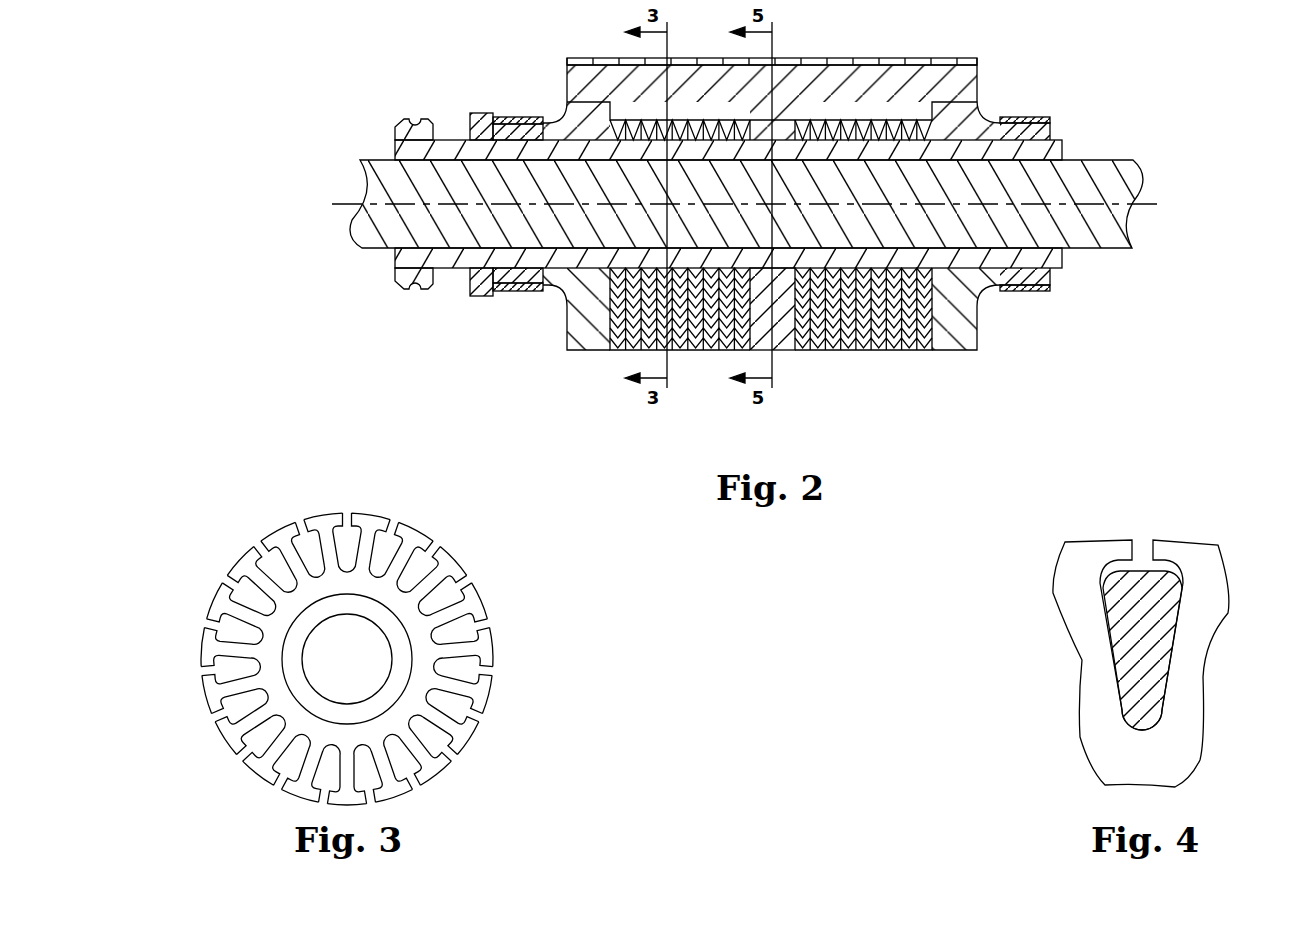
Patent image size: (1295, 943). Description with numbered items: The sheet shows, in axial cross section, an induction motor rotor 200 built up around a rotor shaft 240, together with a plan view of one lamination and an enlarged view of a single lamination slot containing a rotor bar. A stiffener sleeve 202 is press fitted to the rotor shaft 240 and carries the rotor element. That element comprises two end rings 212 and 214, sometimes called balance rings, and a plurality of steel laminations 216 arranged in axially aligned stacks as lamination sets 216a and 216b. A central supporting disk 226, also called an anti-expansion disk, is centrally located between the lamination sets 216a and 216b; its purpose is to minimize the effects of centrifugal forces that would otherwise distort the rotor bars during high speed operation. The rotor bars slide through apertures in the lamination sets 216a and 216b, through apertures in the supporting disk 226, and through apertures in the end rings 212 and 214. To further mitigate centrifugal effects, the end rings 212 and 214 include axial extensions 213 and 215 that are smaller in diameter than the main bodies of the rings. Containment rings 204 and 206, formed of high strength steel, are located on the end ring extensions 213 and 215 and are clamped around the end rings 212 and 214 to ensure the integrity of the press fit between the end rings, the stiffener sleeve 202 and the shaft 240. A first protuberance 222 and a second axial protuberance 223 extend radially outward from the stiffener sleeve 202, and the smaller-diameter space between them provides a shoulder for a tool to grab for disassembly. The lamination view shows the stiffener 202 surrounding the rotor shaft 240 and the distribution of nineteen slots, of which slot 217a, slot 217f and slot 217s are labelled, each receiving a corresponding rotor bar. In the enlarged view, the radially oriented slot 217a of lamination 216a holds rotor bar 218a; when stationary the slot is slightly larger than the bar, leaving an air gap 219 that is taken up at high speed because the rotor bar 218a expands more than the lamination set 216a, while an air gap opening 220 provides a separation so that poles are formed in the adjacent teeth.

In FIG. 2, the rotor 200 is at (747, 212).
In FIG. 2, the stiffener sleeve 202 is at (410, 155).
In FIG. 3, the stiffener sleeve 202 is at (368, 722).
In FIG. 2, the containment ring 204 is at (1010, 118).
In FIG. 2, the containment ring 206 is at (517, 115).
In FIG. 2, the end ring 212 is at (968, 62).
In FIG. 2, the axial extension 213 is at (1040, 128).
In FIG. 2, the end ring 214 is at (587, 62).
In FIG. 2, the axial extension 215 is at (527, 128).
In FIG. 3, the steel laminations 216 is at (485, 648).
In FIG. 2, the lamination set 216a is at (610, 353).
In FIG. 4, the lamination set 216a is at (1082, 560).
In FIG. 2, the lamination set 216b is at (795, 353).
In FIG. 3, the slot 217a is at (362, 547).
In FIG. 4, the slot 217a is at (1178, 560).
In FIG. 3, the slot 217f is at (478, 722).
In FIG. 3, the slot 217s is at (280, 538).
In FIG. 2, the rotor bar 218a is at (905, 95).
In FIG. 3, the rotor bar 218a is at (345, 537).
In FIG. 4, the rotor bar 218a is at (1137, 647).
In FIG. 4, the air gap 219 is at (1162, 566).
In FIG. 2, the air gap opening 220 is at (720, 60).
In FIG. 3, the air gap opening 220 is at (487, 623).
In FIG. 4, the air gap opening 220 is at (1141, 550).
In FIG. 2, the first protuberance 222 is at (402, 125).
In FIG. 2, the second axial protuberance 223 is at (478, 125).
In FIG. 2, the central supporting disk 226 is at (782, 62).
In FIG. 2, the rotor shaft 240 is at (1118, 177).
In FIG. 3, the rotor shaft 240 is at (328, 657).